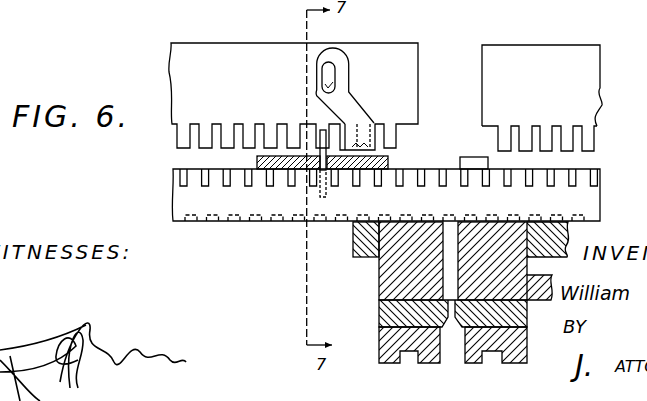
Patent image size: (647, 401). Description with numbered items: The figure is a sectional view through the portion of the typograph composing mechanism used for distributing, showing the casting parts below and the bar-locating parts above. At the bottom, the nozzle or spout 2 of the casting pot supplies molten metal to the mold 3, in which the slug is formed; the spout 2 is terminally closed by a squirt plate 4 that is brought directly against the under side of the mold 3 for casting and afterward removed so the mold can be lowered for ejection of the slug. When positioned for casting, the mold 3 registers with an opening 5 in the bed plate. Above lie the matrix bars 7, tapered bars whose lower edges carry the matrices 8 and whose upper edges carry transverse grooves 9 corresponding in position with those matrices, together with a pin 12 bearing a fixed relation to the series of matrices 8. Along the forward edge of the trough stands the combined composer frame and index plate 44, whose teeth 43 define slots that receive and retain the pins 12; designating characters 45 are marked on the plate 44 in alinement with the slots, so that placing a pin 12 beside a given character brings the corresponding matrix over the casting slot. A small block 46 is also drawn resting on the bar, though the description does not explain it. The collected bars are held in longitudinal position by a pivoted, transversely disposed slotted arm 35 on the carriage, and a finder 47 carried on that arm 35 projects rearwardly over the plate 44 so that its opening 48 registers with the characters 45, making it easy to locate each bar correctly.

The nozzle or spout 2 is at (382, 353).
The mold 3 is at (383, 273).
The squirt plate 4 is at (385, 313).
The opening 5 is at (372, 240).
The matrix bars 7 is at (181, 200).
The matrices 8 is at (257, 221).
The transverse grooves 9 is at (205, 169).
The pin 12 is at (321, 133).
The slotted arm 35 is at (335, 170).
The teeth 43 is at (587, 144).
The combined composer frame and index plate 44 is at (490, 47).
The designating characters 45 is at (320, 84).
The stop block 46 is at (467, 157).
The finder 47 is at (352, 113).
The opening 48 is at (320, 67).